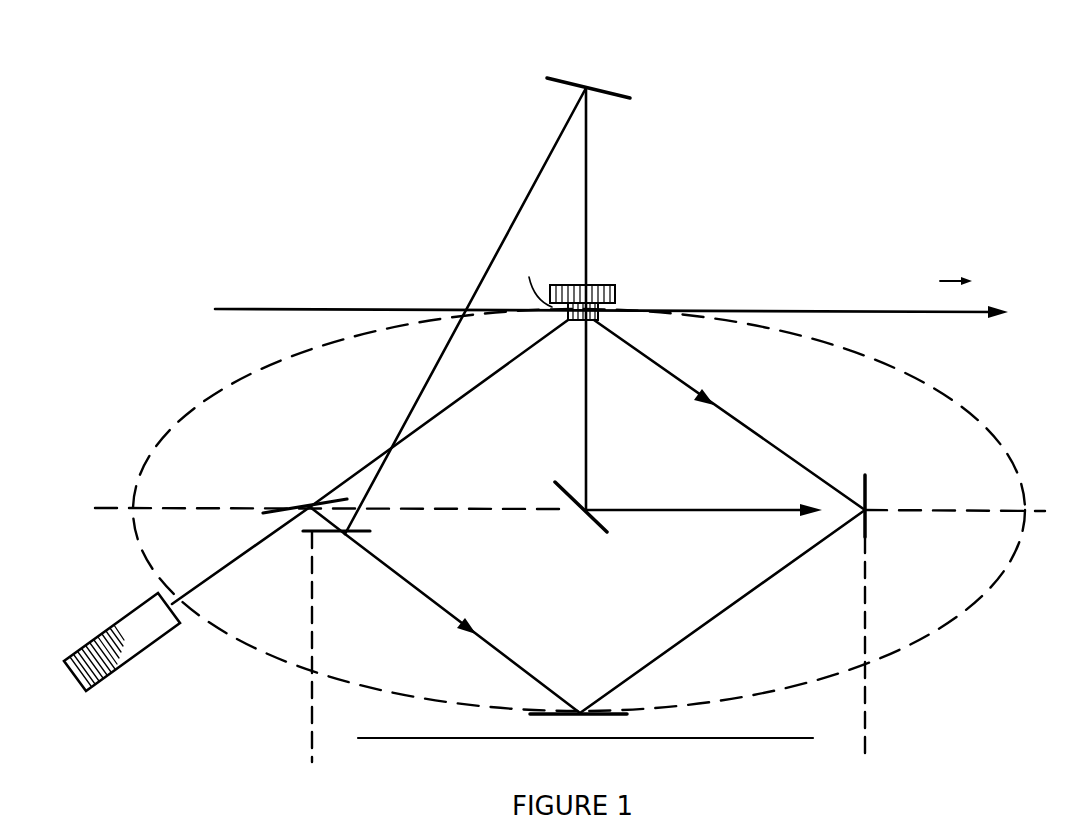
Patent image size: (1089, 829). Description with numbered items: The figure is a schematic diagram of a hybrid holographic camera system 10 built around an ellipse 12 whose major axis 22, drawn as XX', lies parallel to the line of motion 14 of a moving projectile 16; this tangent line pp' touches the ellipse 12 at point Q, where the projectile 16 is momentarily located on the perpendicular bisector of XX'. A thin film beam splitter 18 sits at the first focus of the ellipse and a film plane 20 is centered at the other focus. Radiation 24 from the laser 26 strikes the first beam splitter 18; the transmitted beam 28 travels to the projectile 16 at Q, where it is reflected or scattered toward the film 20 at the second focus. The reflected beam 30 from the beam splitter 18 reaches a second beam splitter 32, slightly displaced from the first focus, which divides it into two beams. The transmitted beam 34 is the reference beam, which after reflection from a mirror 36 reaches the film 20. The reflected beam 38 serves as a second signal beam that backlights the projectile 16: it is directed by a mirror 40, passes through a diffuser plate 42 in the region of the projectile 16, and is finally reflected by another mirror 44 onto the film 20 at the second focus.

The hybrid holographic camera system 10 is at (356, 138).
The ellipse 12 is at (215, 396).
The line of motion 14 is at (912, 315).
The moving projectile 16 is at (590, 322).
The thin film beam splitter 18 is at (301, 505).
The film plane 20 is at (868, 492).
The major axis 22 is at (218, 506).
The radiation 24 is at (222, 568).
The laser 26 is at (100, 683).
The transmitted beam 28 is at (514, 358).
The reflected beam 30 is at (318, 513).
The beam splitter 32 is at (356, 525).
The transmitted beam 34 is at (500, 651).
The mirror 36 is at (563, 719).
The reflected beam 38 is at (588, 186).
The mirror 40 is at (562, 82).
The diffuser plate 42 is at (600, 292).
The mirror 44 is at (589, 518).